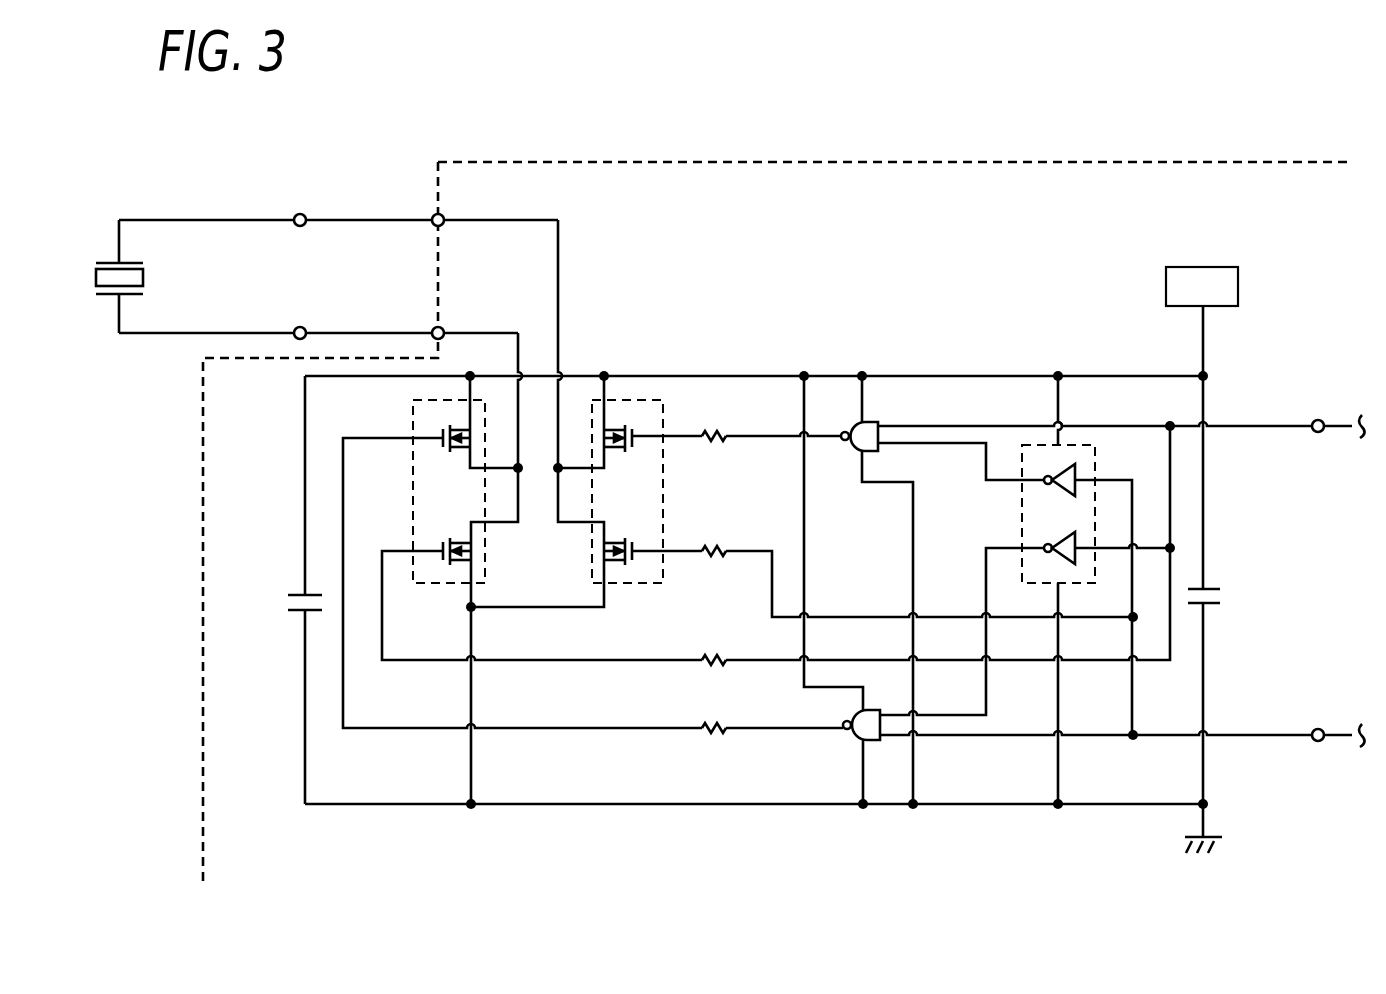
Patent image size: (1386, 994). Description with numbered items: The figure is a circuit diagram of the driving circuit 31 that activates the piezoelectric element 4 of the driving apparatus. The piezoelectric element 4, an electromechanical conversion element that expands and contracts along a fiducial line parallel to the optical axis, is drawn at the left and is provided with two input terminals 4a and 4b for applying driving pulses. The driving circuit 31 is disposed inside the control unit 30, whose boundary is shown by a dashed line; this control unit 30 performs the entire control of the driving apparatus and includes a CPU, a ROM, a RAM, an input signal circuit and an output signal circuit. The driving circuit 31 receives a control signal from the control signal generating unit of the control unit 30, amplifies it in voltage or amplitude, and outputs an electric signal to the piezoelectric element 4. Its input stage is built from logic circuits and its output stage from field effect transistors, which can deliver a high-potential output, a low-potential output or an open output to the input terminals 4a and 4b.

The piezoelectric element 4 is at (97, 272).
The input terminal 4a is at (300, 212).
The input terminal 4b is at (300, 326).
The control unit 30 is at (1170, 160).
The driving circuit 31 is at (1040, 288).